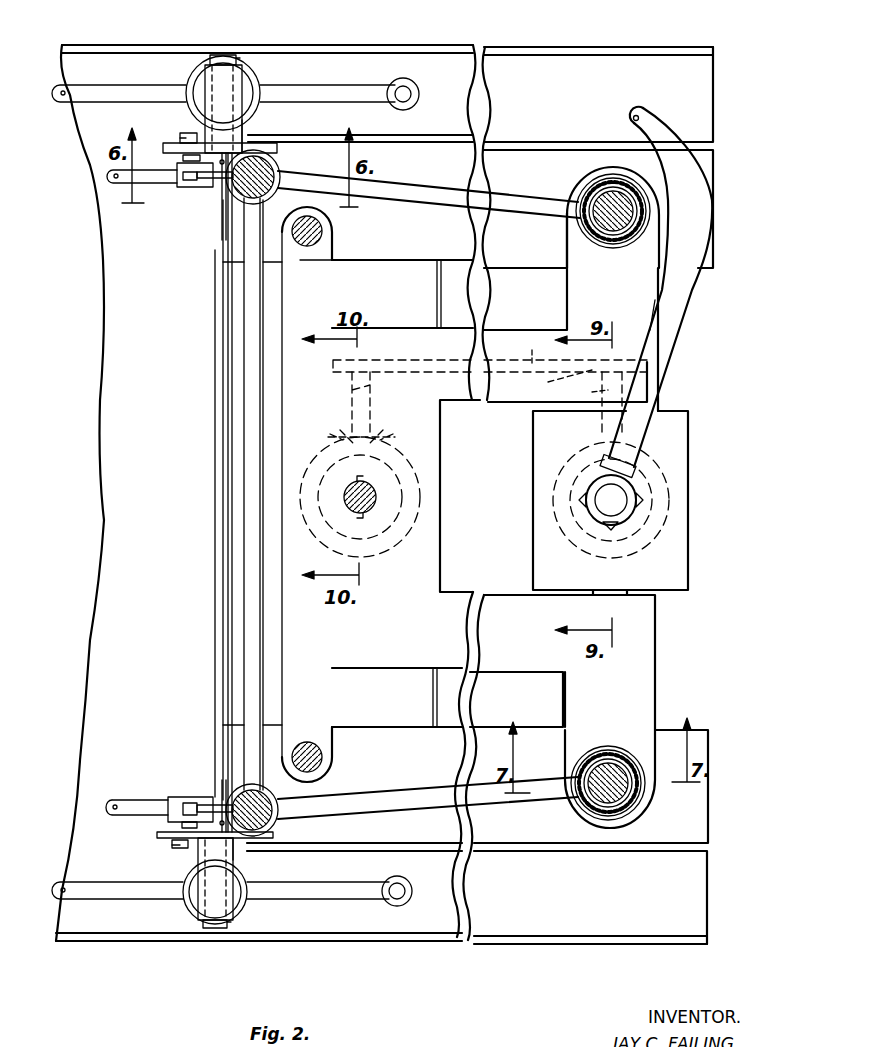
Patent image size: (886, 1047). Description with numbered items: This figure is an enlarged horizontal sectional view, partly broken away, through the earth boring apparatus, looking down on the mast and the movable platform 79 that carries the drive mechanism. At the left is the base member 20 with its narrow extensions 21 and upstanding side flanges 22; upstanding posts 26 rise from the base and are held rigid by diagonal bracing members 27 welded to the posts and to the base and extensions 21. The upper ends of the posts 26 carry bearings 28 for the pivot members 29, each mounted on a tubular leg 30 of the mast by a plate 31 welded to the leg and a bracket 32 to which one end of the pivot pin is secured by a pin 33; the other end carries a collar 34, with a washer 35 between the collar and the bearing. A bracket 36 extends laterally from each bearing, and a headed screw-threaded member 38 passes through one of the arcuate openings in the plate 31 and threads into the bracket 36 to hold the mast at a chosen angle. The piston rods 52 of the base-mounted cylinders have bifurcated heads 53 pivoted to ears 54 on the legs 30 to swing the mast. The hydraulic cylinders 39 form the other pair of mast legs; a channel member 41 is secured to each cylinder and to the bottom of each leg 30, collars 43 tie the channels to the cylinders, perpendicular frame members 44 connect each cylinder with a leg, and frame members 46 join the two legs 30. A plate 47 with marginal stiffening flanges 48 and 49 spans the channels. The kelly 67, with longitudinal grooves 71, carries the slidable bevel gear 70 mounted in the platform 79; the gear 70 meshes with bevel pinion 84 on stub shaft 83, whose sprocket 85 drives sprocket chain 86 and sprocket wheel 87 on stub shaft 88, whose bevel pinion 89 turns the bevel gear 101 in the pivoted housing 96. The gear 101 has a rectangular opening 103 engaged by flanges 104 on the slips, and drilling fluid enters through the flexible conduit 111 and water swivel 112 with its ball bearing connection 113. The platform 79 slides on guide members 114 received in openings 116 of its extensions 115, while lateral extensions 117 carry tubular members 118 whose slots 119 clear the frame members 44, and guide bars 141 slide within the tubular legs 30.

The base member 20 is at (116, 544).
The narrow extensions 21 is at (700, 93).
The upstanding side flanges 22 is at (632, 53).
The upstanding posts 26 is at (192, 114).
The diagonal bracing members 27 is at (116, 78).
The bearings 28 is at (245, 128).
The pivot members 29 is at (193, 82).
The tubular legs 30 is at (279, 168).
The plate 31 is at (268, 147).
The bracket 32 is at (236, 122).
The pin 33 is at (222, 178).
The collar 34 is at (226, 60).
The washer 35 is at (244, 64).
The bracket 36 is at (183, 137).
The headed screw-threaded member 38 is at (183, 158).
The hydraulic cylinders 39 is at (634, 252).
The channel member 41 is at (540, 157).
The collars 43 is at (572, 222).
The frame members 44 is at (398, 185).
The frame members 46 is at (250, 423).
The plate 47 is at (396, 278).
The marginal stiffening flange 48 is at (442, 300).
The marginal stiffening flange 49 is at (226, 372).
The piston rods 52 is at (148, 182).
The bifurcated heads 53 is at (208, 188).
The ears 54 is at (195, 180).
The kelly 67 is at (372, 490).
The bevel gear 70 is at (418, 482).
The longitudinal grooves 71 is at (360, 481).
The platform 79 is at (650, 350).
The stub shaft 83 is at (376, 402).
The bevel pinion 84 is at (385, 437).
The sprocket 85 is at (378, 360).
The sprocket chain 86 is at (531, 360).
The sprocket wheel 87 is at (550, 383).
The stub shaft 88 is at (592, 392).
The bevel pinion 89 is at (596, 432).
The housing 96 is at (668, 422).
The bevel gear 101 is at (690, 513).
The rectangular opening 103 is at (592, 518).
The flanges 104 is at (592, 486).
The flexible conduit 111 is at (700, 193).
The water swivel 112 is at (640, 490).
The ball bearing connection 113 is at (645, 522).
The guide members 114 is at (322, 236).
The extensions 115 is at (328, 236).
The openings 116 is at (294, 248).
The lateral extensions 117 is at (583, 298).
The tubular members 118 is at (590, 254).
The longitudinally extending slot 119 is at (580, 190).
The guide bars 141 is at (240, 198).